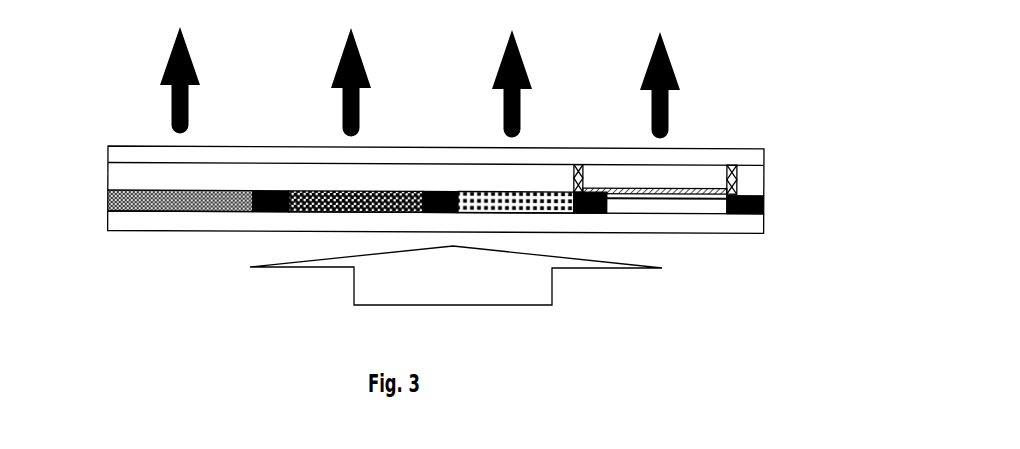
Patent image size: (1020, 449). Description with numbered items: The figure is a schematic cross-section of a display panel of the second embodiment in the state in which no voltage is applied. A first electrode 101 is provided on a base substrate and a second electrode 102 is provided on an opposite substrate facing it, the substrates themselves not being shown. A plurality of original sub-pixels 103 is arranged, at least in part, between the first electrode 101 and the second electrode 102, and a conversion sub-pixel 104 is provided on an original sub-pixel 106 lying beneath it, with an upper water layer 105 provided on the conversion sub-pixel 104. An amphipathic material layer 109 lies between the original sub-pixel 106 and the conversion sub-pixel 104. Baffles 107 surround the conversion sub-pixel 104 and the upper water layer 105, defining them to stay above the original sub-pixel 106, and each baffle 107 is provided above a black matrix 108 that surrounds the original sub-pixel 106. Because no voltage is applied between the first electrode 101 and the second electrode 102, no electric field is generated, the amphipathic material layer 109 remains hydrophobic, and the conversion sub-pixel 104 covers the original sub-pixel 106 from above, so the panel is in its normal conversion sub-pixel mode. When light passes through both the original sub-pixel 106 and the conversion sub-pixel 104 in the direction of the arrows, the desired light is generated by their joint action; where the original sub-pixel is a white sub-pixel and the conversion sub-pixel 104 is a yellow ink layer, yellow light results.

The first electrode 101 is at (137, 223).
The second electrode 102 is at (129, 158).
The original sub-pixels 103 is at (108, 204).
The conversion sub-pixel 104 is at (737, 186).
The upper water layer 105 is at (140, 180).
The original sub-pixel 106 is at (697, 207).
The baffles 107 is at (580, 190).
The black matrix 108 is at (752, 212).
The amphipathic material layer 109 is at (764, 195).